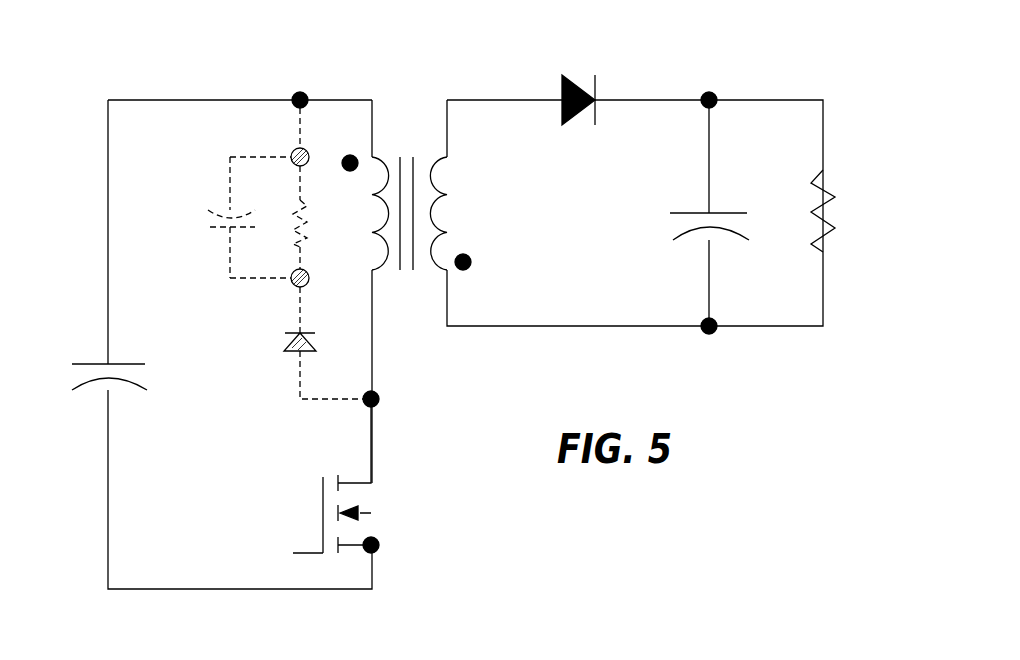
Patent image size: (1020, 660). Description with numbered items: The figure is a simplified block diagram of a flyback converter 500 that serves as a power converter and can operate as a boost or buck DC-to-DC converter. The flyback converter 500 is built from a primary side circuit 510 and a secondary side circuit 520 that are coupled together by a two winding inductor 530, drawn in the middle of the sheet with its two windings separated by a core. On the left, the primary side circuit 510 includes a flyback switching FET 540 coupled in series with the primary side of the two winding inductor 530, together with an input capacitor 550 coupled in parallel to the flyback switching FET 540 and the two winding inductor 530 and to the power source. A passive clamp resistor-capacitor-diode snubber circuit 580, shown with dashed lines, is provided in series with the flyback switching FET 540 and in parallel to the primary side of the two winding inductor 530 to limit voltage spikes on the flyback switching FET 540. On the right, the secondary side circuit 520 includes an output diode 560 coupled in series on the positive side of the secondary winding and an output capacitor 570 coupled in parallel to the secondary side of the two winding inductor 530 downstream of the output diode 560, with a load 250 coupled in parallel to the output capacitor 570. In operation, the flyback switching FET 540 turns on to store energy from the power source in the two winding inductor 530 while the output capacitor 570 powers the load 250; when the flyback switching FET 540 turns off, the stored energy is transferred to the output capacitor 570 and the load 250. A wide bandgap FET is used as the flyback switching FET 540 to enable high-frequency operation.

The flyback converter 500 is at (110, 70).
The primary side circuit 510 is at (406, 495).
The secondary side circuit 520 is at (854, 261).
The two winding inductor 530 is at (430, 220).
The flyback switching FET 540 is at (322, 515).
The input capacitor 550 is at (95, 381).
The output diode 560 is at (560, 93).
The output capacitor 570 is at (682, 234).
The passive clamp RCD snubber circuit 580 is at (198, 179).
The load 250 is at (830, 196).